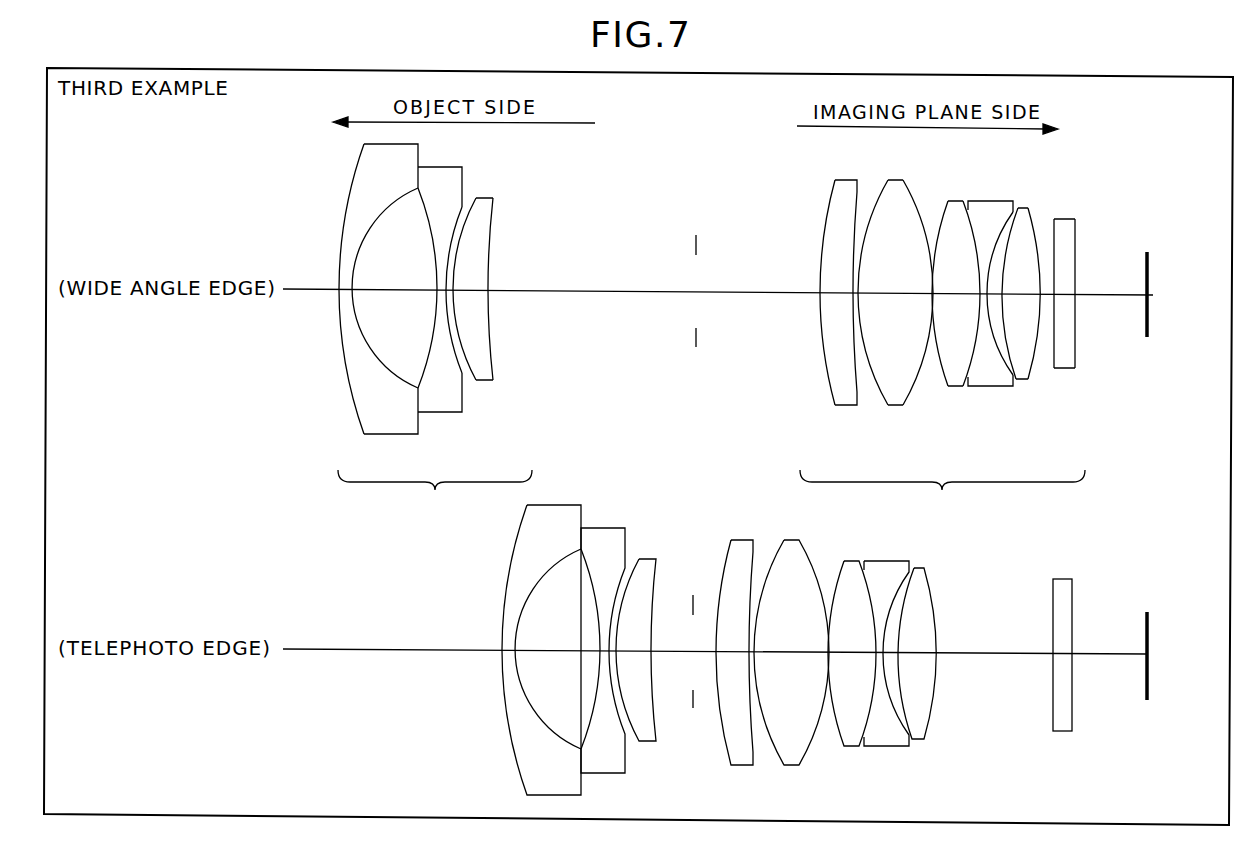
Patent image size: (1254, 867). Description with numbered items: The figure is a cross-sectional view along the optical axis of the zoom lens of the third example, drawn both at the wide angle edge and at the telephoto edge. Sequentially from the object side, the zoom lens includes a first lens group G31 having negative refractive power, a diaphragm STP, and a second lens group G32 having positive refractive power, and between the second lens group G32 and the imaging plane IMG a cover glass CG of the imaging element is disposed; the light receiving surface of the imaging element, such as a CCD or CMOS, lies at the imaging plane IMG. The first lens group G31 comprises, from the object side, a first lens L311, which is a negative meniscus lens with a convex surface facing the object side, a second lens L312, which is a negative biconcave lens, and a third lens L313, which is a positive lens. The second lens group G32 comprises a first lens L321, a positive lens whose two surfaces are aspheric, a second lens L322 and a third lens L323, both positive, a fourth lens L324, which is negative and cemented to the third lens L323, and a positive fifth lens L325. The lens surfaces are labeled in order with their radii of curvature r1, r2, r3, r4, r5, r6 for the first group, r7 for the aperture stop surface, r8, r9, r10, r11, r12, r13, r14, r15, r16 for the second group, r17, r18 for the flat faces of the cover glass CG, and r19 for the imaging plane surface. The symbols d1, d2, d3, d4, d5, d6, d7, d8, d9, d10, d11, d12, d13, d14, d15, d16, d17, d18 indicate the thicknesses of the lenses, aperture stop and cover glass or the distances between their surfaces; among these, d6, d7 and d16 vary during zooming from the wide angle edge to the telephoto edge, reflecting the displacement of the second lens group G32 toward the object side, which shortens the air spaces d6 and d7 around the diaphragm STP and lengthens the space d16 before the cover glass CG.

The radius of curvature of first surface r1 is at (341, 235).
The radius of curvature of second surface r2 is at (383, 213).
The radius of curvature of third surface r3 is at (425, 212).
The radius of curvature of fourth surface r4 is at (456, 206).
The radius of curvature of fifth surface r5 is at (465, 232).
The radius of curvature of sixth surface r6 is at (489, 263).
The aperture stop surface r7 is at (694, 243).
The radius of curvature of eighth surface r8 is at (825, 227).
The radius of curvature of ninth surface r9 is at (855, 205).
The radius of curvature of tenth surface r10 is at (877, 193).
The radius of curvature of eleventh surface r11 is at (902, 181).
The radius of curvature of twelfth surface r12 is at (944, 206).
The radius of curvature of thirteenth surface r13 is at (964, 203).
The radius of curvature of fourteenth surface r14 is at (1010, 214).
The radius of curvature of fifteenth surface r15 is at (1021, 212).
The radius of curvature of sixteenth surface r16 is at (1033, 222).
The radius of curvature of seventeenth surface r17 is at (1050, 218).
The radius of curvature of eighteenth surface r18 is at (1076, 268).
The imaging plane surface r19 is at (1143, 252).
The thickness d1 is at (342, 296).
The distance d2 is at (393, 292).
The thickness d3 is at (437, 292).
The distance d4 is at (450, 292).
The thickness d5 is at (453, 292).
The distance d6 is at (598, 292).
The distance d7 is at (737, 293).
The thickness d8 is at (840, 295).
The distance d9 is at (855, 295).
The thickness d10 is at (874, 295).
The distance d11 is at (897, 295).
The thickness d12 is at (957, 295).
The thickness d13 is at (983, 295).
The distance d14 is at (1020, 295).
The thickness d15 is at (1047, 296).
The distance d16 is at (1062, 296).
The thickness d17 is at (1074, 296).
The distance d18 is at (1123, 297).
The first lens L311 is at (364, 306).
The second lens L312 is at (437, 301).
The third lens L313 is at (492, 333).
The first lens L321 is at (818, 327).
The second lens L322 is at (894, 308).
The third lens L323 is at (954, 321).
The fourth lens L324 is at (991, 309).
The fifth lens L325 is at (1035, 309).
The first lens group G31 is at (411, 333).
The second lens group G32 is at (932, 339).
The diaphragm STP is at (689, 271).
The cover glass CG is at (1090, 274).
The imaging plane IMG is at (1177, 278).